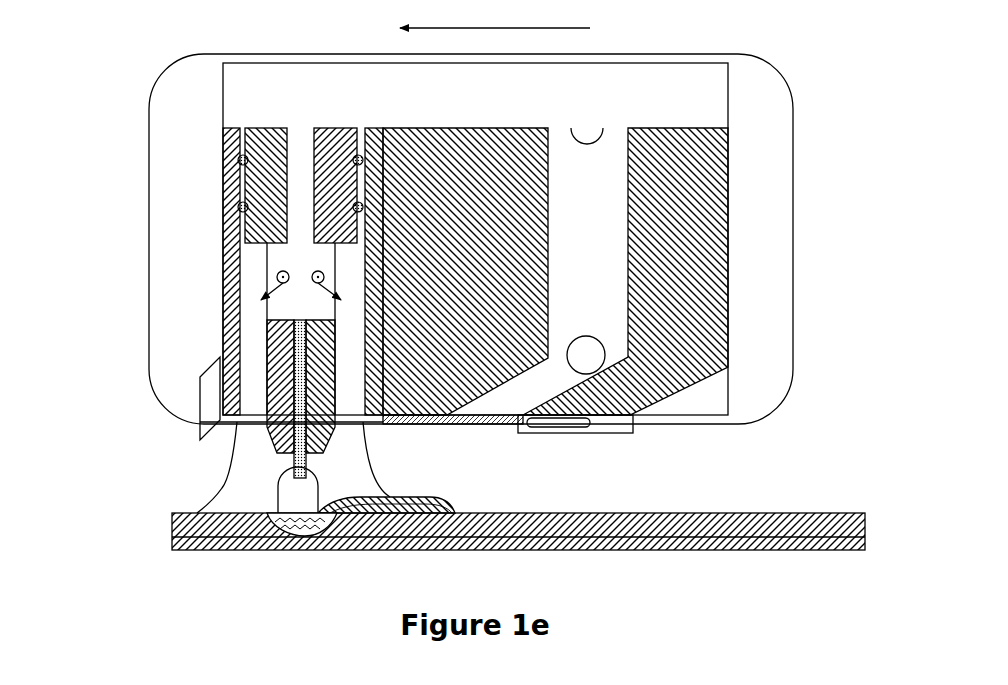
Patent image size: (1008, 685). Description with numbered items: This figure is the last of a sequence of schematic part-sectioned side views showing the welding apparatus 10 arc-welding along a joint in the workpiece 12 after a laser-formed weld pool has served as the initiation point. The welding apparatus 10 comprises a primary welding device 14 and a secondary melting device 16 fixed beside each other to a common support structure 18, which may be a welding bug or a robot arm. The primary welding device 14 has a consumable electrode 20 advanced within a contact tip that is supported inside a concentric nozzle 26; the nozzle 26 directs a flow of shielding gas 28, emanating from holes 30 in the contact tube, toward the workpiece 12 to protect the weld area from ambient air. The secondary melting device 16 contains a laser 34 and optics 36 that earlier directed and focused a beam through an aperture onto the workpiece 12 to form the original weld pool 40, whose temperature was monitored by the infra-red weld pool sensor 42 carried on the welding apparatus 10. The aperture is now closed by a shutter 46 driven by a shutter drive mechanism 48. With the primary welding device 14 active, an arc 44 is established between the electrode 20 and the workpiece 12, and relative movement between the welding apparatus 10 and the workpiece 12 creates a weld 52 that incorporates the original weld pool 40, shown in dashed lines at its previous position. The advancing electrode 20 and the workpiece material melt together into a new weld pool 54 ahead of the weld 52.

The welding apparatus 10 is at (118, 58).
The workpiece 12 is at (748, 513).
The primary welding device 14 is at (208, 170).
The secondary melting device 16 is at (737, 172).
The common support structure 18 is at (148, 310).
The consumable electrode 20 is at (295, 456).
The nozzle 26 is at (220, 300).
The shielding gas 28 is at (225, 487).
The holes 30 is at (301, 362).
The laser 34 is at (590, 125).
The optics 36 is at (587, 345).
The weld pool 40 is at (442, 498).
The infra-red weld pool sensor 42 is at (202, 368).
The arc 44 is at (310, 491).
The shutter 46 is at (498, 427).
The shutter drive mechanism 48 is at (610, 427).
The weld 52 is at (367, 548).
The new weld pool 54 is at (291, 548).